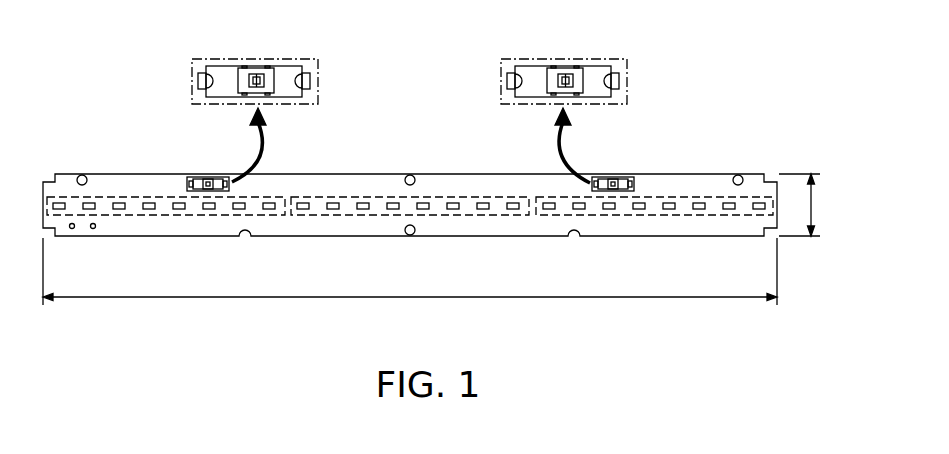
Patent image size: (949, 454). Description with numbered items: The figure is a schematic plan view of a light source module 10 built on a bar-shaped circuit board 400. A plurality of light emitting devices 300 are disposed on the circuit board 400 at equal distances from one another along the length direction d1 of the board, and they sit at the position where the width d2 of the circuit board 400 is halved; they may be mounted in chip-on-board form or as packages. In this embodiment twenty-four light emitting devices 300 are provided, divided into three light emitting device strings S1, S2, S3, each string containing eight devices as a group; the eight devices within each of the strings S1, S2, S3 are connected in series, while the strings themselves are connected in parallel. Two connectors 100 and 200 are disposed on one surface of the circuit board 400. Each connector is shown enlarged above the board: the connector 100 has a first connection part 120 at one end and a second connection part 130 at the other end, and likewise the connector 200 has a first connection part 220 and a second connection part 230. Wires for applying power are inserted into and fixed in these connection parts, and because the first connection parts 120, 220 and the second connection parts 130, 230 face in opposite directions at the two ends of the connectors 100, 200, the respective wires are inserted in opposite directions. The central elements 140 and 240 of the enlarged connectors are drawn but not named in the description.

The light source module 10 is at (424, 37).
The connector 100 is at (254, 102).
The first connection part 120 is at (198, 80).
The second connection part 130 is at (310, 80).
The light emitting chip 140 is at (257, 73).
The connector 200 is at (563, 102).
The first connection part 220 is at (507, 80).
The second connection part 230 is at (619, 80).
The light emitting chip of second package 240 is at (566, 73).
The light emitting device 300 is at (90, 210).
The circuit board 400 is at (210, 224).
The light emitting device string S1 is at (166, 240).
The light emitting device string S2 is at (380, 216).
The light emitting device string S3 is at (625, 216).
The length direction d1 is at (410, 281).
The width d2 is at (809, 205).